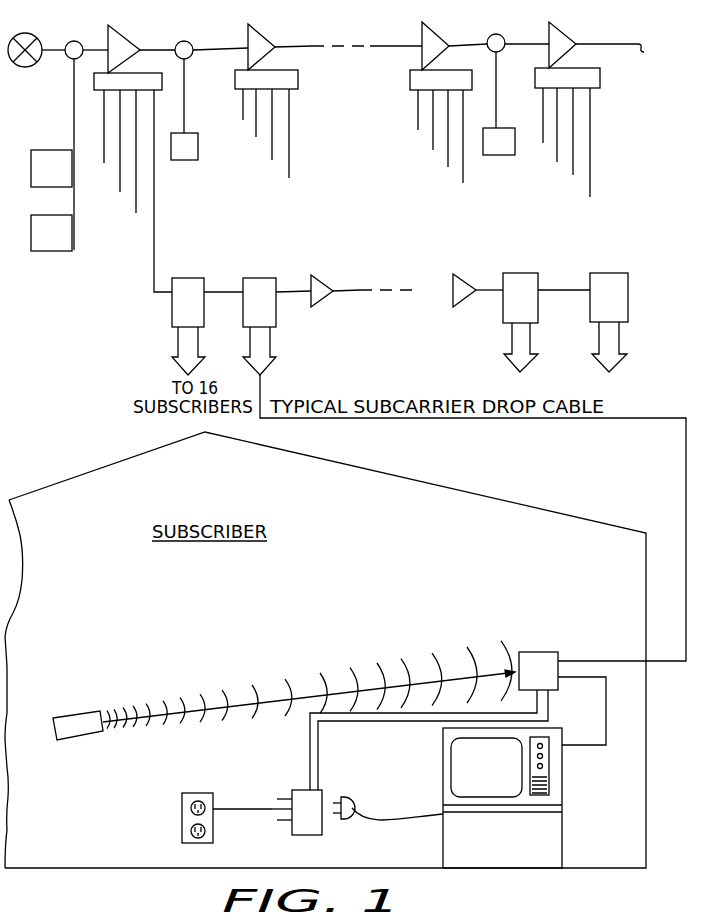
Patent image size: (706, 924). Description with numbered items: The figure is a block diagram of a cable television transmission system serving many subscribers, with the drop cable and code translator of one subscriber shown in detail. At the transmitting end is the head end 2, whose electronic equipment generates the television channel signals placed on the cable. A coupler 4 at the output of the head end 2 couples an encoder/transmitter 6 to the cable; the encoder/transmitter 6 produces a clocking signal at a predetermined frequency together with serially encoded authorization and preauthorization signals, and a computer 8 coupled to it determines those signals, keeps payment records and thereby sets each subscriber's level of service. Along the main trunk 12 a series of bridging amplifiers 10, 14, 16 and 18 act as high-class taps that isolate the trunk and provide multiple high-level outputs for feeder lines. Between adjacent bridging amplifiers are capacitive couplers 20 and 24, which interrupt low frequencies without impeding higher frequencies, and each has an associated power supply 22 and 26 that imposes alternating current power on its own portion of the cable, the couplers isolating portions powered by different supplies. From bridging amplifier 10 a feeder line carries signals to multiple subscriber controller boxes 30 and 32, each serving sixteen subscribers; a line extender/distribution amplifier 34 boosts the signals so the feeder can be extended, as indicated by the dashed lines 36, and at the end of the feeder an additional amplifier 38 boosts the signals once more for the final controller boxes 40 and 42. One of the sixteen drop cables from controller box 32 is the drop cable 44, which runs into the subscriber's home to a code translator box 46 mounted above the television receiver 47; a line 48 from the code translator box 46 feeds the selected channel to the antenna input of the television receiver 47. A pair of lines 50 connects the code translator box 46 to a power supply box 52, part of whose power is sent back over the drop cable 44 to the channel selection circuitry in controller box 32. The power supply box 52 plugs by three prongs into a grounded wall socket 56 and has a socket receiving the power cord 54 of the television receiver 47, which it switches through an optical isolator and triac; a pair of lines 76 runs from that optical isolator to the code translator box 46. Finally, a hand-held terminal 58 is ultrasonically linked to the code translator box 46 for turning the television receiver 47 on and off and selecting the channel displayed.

The head end 2 is at (34, 37).
The coupler 4 is at (76, 41).
The encoder/transmitter 6 is at (72, 170).
The computer 8 is at (72, 235).
The bridging amplifier 10 is at (120, 36).
The main trunk 12 is at (340, 45).
The bridging amplifier 14 is at (265, 36).
The bridging amplifier 16 is at (438, 36).
The bridging amplifier 18 is at (566, 36).
The capacitive coupler 20 is at (190, 42).
The power supply 22 is at (182, 160).
The capacitive coupler 24 is at (503, 37).
The power supply 26 is at (493, 155).
The multiple subscriber controller box 30 is at (190, 278).
The multiple subscriber controller box 32 is at (262, 278).
The line extender/distribution amplifier 34 is at (330, 278).
The dashed lines 36 is at (393, 290).
The additional amplifier 38 is at (462, 278).
The multiple subscriber controller box 40 is at (525, 273).
The multiple subscriber controller box 42 is at (612, 273).
The drop cable 44 is at (686, 497).
The code translator box 46 is at (540, 660).
The television receiver 47 is at (504, 775).
The line 48 is at (606, 722).
The pair of lines 50 is at (310, 745).
The power supply box 52 is at (310, 828).
The power cord 54 is at (345, 820).
The grounded wall socket 56 is at (190, 795).
The hand-held terminal 58 is at (80, 717).
The pair of lines 76 is at (318, 769).